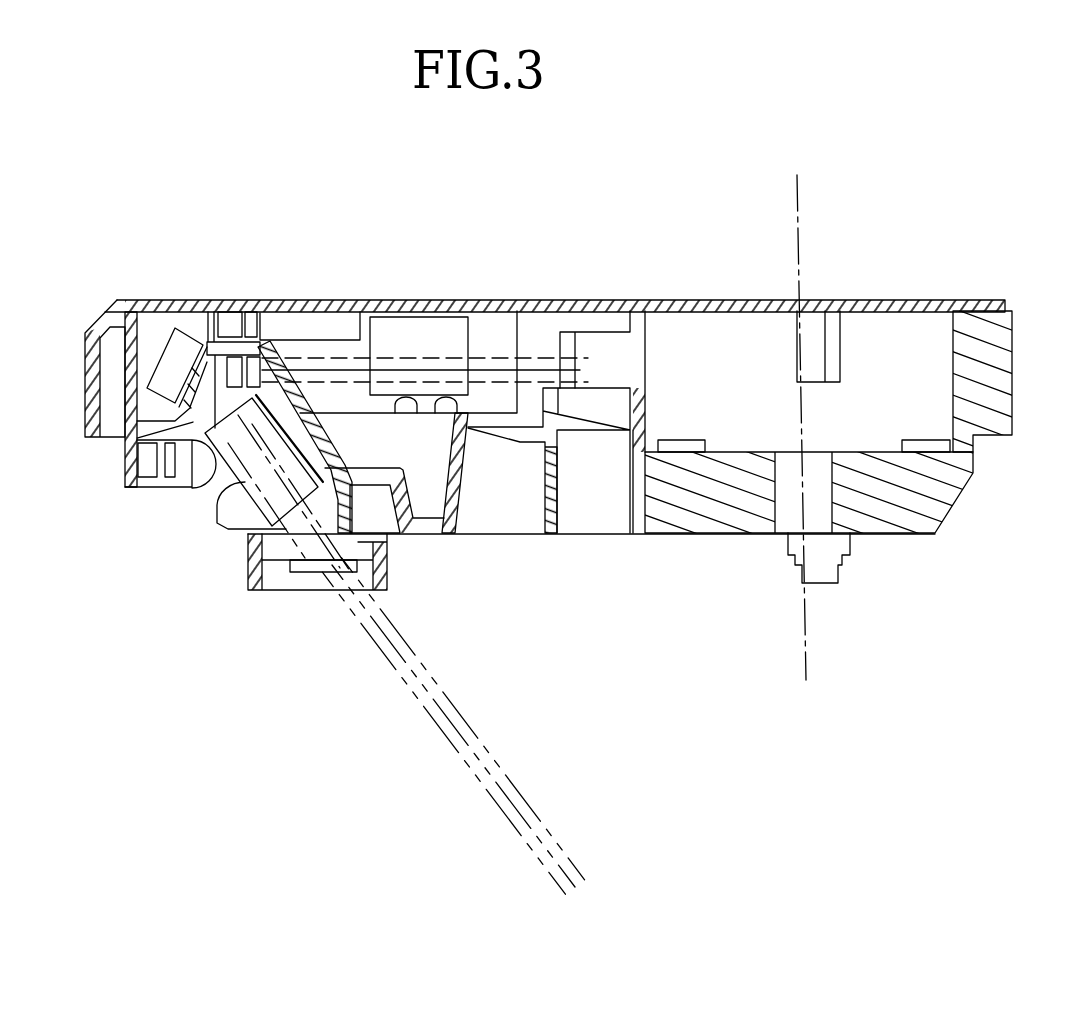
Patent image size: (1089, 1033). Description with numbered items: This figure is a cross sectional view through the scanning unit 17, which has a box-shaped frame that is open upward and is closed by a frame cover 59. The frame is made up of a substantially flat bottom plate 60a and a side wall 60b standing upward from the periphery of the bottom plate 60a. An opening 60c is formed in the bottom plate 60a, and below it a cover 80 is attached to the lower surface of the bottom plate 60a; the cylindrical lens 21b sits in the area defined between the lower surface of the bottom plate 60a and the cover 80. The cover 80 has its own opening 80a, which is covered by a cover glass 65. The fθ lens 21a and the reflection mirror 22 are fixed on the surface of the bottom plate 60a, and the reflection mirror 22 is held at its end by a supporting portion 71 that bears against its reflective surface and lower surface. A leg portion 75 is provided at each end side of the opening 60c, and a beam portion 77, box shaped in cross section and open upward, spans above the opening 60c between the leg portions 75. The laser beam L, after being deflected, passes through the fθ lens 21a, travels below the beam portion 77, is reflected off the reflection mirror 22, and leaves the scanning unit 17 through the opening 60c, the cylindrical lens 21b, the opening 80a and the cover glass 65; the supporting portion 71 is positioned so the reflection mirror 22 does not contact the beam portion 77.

The scanning unit 17 is at (697, 251).
The fθ lens 21a is at (428, 335).
The cylindrical lens 21b is at (243, 486).
The reflection mirror 22 is at (178, 352).
The frame cover 59 is at (898, 299).
The bottom plate 60a is at (603, 392).
The side wall 60b is at (987, 299).
The opening 60c is at (196, 487).
The cover glass 65 is at (285, 560).
The supporting portion 71 is at (190, 412).
The leg portion 75 is at (260, 352).
The beam portion 77 is at (240, 348).
The cover 80 is at (216, 528).
The opening 80a is at (272, 552).
The laser beam L is at (402, 633).